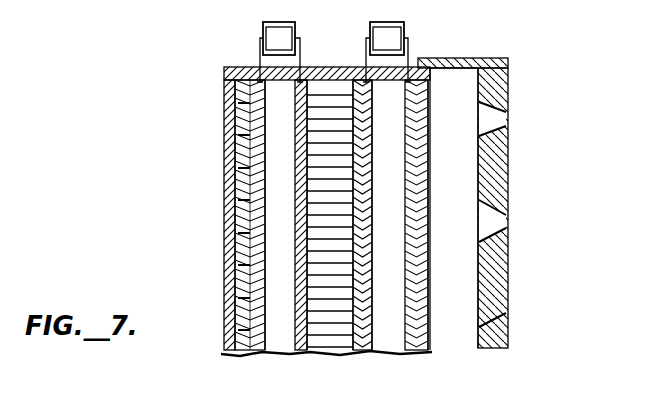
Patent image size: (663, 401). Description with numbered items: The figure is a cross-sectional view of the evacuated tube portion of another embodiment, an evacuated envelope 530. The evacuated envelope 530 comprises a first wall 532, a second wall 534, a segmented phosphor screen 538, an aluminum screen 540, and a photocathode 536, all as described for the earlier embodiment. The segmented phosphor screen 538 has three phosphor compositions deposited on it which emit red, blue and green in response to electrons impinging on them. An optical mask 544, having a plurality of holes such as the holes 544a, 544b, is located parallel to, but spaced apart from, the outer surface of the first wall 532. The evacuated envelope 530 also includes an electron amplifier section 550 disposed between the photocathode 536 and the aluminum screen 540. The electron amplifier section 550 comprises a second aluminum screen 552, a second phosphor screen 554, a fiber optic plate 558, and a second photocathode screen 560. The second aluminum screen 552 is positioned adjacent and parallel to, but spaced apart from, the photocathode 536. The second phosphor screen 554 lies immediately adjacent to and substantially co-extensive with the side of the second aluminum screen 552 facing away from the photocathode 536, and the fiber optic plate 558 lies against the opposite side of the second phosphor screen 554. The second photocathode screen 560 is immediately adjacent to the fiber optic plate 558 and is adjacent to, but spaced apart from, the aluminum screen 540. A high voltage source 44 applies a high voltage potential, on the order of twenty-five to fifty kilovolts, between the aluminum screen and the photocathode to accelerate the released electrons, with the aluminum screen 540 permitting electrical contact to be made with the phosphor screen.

The high voltage source 44 is at (289, 27).
The evacuated envelope 530 is at (170, 211).
The first wall 532 is at (425, 354).
The second wall 534 is at (225, 306).
The photocathode 536 is at (413, 355).
The segmented phosphor screen 538 is at (237, 352).
The aluminum screen 540 is at (253, 355).
The optical mask 544 is at (493, 336).
The hole 544a is at (492, 118).
The hole 544b is at (492, 222).
The electron amplifier section 550 is at (330, 362).
The second aluminum screen 552 is at (358, 355).
The second phosphor screen 554 is at (356, 358).
The fiber optic plate 558 is at (314, 80).
The second photocathode screen 560 is at (301, 354).